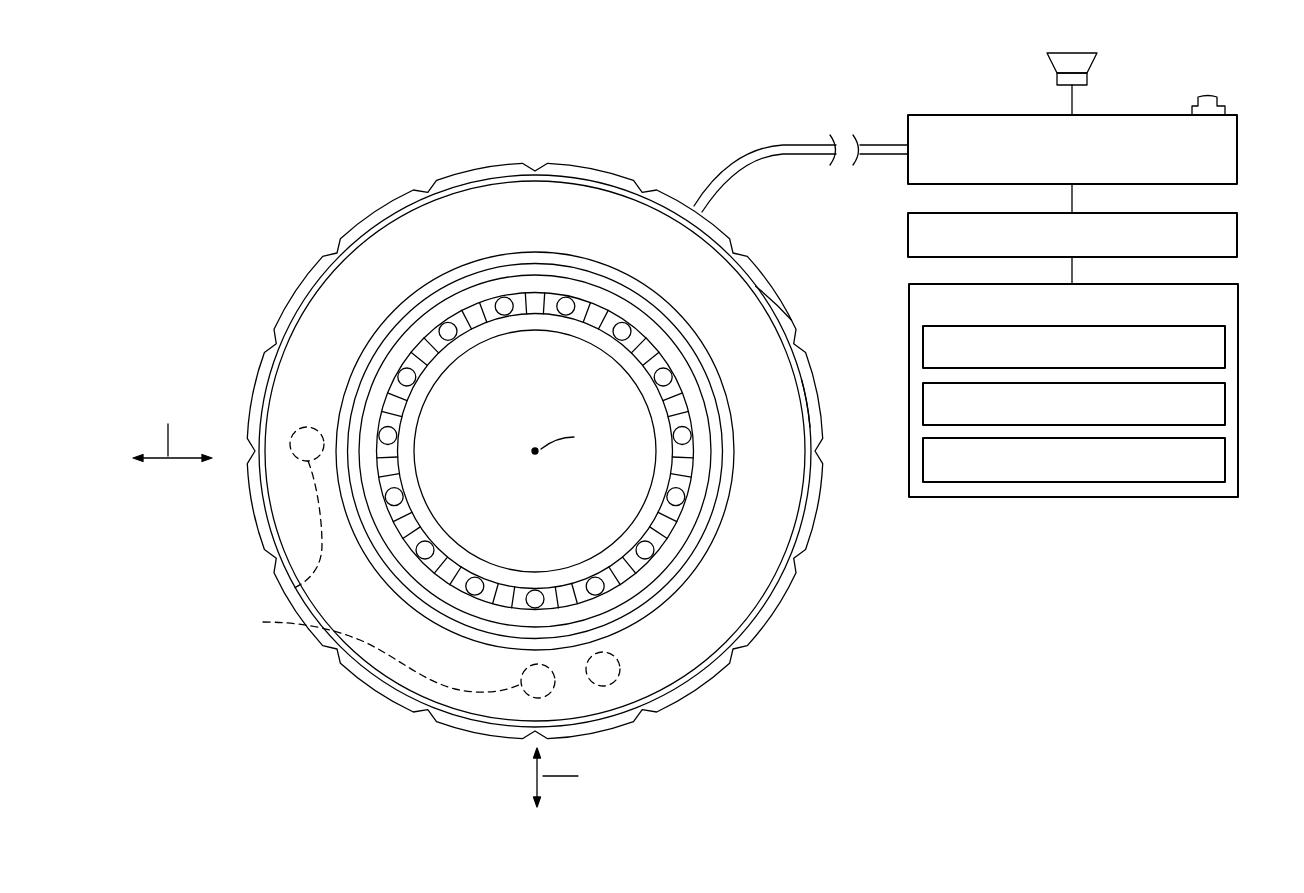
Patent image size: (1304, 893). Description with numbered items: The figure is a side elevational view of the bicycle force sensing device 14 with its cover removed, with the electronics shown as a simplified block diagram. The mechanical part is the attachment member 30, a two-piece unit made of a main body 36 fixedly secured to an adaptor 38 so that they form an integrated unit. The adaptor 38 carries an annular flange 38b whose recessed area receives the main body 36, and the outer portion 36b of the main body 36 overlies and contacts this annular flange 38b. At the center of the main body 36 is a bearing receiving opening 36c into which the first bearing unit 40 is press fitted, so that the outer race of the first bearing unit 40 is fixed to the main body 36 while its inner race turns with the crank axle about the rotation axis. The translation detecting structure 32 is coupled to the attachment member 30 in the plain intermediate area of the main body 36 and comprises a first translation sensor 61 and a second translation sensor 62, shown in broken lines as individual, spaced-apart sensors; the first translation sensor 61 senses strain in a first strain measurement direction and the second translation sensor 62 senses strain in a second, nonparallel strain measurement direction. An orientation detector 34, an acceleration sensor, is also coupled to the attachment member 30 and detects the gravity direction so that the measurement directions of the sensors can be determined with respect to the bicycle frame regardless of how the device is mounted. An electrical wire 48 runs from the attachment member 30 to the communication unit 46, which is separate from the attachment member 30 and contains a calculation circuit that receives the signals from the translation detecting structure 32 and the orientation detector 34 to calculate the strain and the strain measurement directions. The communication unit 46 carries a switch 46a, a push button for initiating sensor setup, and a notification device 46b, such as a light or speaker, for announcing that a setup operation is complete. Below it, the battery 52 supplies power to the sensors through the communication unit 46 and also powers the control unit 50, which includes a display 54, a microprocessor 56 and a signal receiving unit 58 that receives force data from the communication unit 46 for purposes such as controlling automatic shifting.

The bicycle force sensing device 14 is at (310, 179).
The attachment member 30 is at (437, 112).
The translation detecting structure 32 is at (233, 580).
The orientation detector 34 is at (620, 668).
The main body 36 is at (459, 180).
The outer portion 36b is at (808, 397).
The bearing receiving opening 36c is at (723, 450).
The adaptor 38 is at (494, 160).
The annular flange 38b is at (782, 302).
The first bearing unit 40 is at (591, 278).
The communication unit 46 is at (1242, 138).
The switch 46a is at (1210, 95).
The notification device 46b is at (1092, 62).
The electrical wire 48 is at (889, 143).
The control unit 50 is at (1242, 304).
The battery 52 is at (1242, 236).
The display 54 is at (1226, 346).
The microprocessor 56 is at (1226, 400).
The signal receiving unit 58 is at (1226, 460).
The first translation sensor 61 is at (396, 653).
The second translation sensor 62 is at (292, 589).